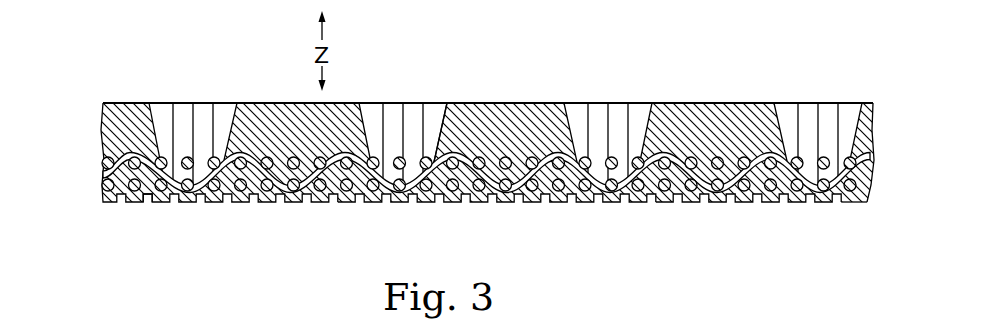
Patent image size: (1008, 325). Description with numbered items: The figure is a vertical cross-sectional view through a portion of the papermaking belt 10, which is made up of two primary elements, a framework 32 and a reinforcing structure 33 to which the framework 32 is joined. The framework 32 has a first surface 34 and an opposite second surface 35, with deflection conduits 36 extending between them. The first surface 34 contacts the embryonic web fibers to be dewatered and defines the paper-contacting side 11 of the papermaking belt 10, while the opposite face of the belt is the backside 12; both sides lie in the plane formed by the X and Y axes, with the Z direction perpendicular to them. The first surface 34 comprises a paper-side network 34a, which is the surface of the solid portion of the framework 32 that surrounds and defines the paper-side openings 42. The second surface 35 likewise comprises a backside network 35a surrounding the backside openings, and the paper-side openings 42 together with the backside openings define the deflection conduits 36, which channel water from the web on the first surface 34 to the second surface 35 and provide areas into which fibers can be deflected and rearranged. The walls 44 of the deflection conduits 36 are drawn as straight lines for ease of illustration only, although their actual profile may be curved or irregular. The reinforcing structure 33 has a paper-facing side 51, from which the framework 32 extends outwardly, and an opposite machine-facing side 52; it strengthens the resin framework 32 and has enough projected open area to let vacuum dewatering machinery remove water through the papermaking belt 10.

The papermaking belt 10 is at (486, 38).
The paper-contacting side 11 is at (868, 100).
The backside 12 is at (842, 212).
The framework 32 is at (509, 102).
The reinforcing structure 33 is at (798, 203).
The first surface 34 is at (139, 102).
The paper-side network 34a is at (146, 103).
The second surface 35 is at (111, 205).
The backside network 35a is at (148, 203).
The deflection conduits 36 is at (408, 102).
The paper-side openings 42 is at (653, 100).
The walls 44 is at (223, 122).
The paper-facing side 51 is at (467, 102).
The machine-facing side 52 is at (613, 205).